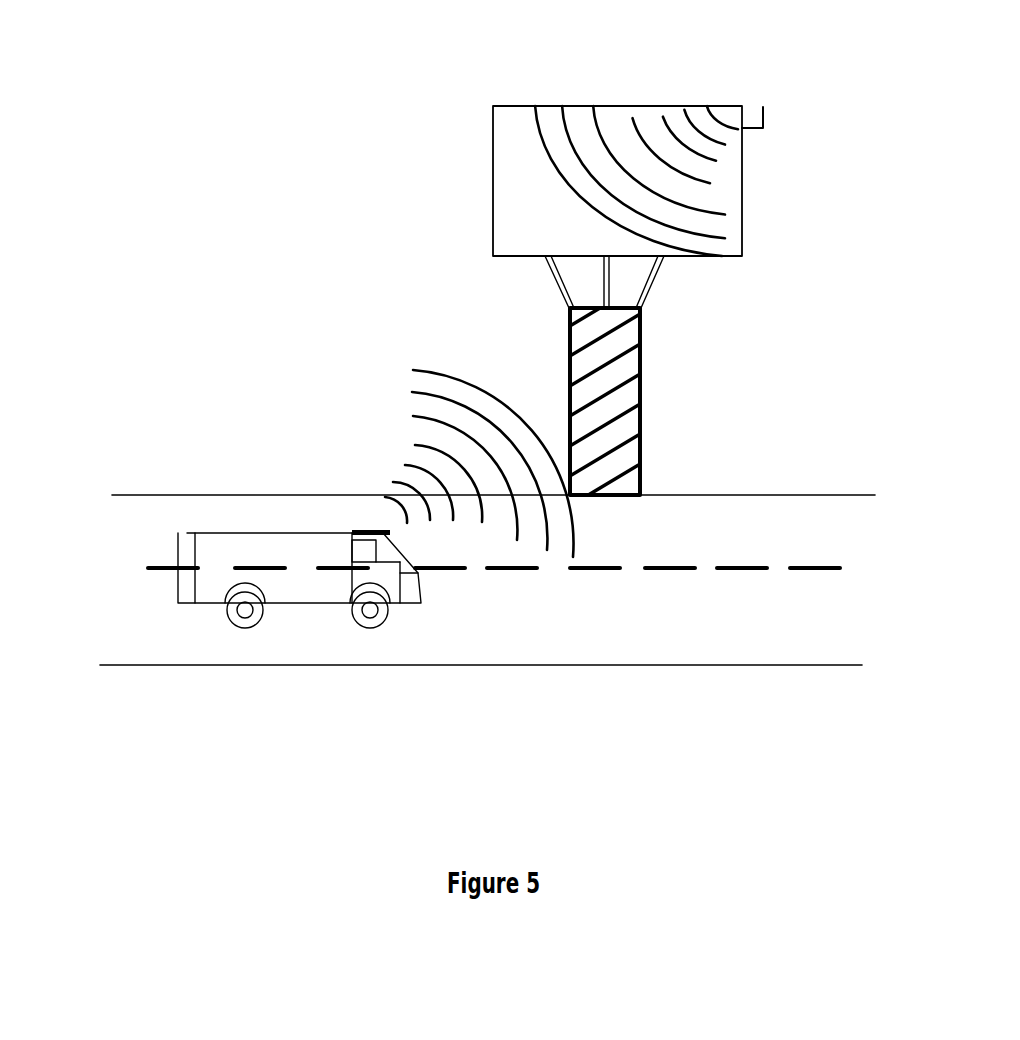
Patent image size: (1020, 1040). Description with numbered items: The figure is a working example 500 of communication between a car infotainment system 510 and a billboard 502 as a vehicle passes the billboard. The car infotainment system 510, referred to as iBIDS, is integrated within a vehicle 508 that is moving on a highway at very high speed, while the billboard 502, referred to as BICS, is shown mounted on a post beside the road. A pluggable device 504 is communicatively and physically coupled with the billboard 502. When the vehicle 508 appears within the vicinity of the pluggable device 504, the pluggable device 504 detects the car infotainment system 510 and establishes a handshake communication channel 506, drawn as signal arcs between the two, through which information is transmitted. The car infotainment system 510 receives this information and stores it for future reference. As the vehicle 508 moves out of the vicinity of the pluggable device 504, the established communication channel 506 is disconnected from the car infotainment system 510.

The system environment 500 is at (902, 751).
The billboard 502 is at (560, 103).
The pluggable device 504 is at (763, 107).
The handshake communication channel 506 is at (413, 383).
The vehicle 508 is at (175, 568).
The car infotainment system 510 is at (365, 533).